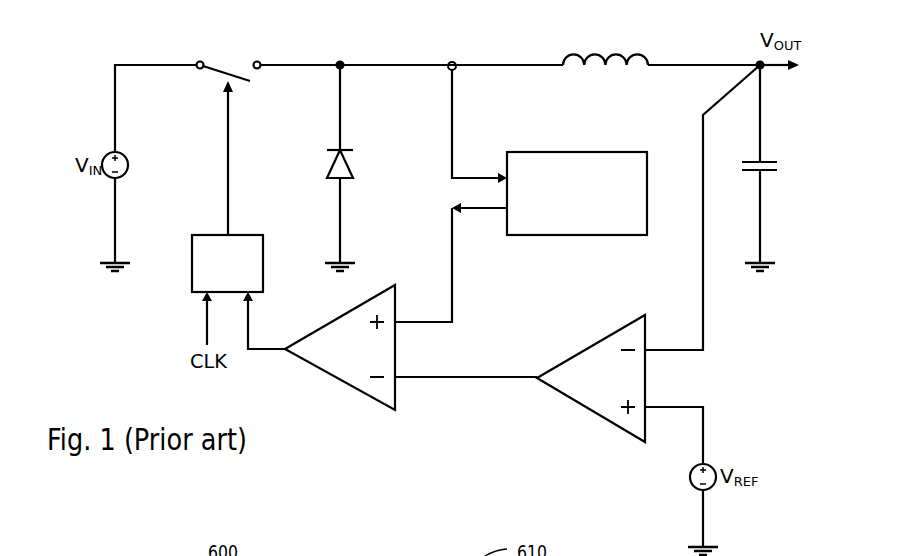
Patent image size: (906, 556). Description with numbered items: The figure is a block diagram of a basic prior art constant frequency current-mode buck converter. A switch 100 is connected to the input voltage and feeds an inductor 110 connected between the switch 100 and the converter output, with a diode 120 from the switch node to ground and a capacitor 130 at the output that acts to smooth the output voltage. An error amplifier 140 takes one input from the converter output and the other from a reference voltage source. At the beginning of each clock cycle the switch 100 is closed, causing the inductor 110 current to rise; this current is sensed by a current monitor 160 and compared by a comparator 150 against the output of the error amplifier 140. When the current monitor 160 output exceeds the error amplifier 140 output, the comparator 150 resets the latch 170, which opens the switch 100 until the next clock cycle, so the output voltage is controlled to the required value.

The switch 100 is at (227, 53).
The inductor 110 is at (612, 52).
The diode 120 is at (348, 165).
The capacitor 130 is at (743, 172).
The error amplifier 140 is at (597, 387).
The comparator 150 is at (332, 348).
The current monitor 160 is at (623, 173).
The latch 170 is at (217, 237).